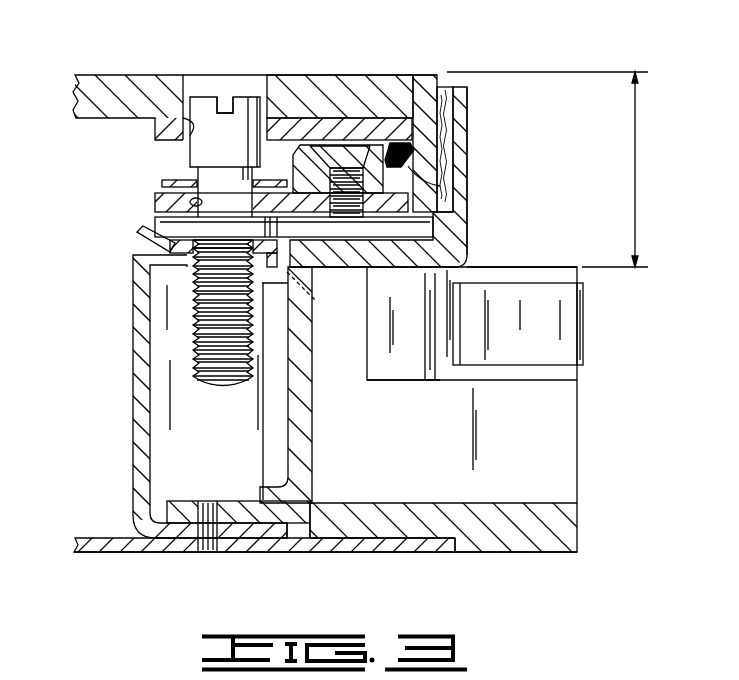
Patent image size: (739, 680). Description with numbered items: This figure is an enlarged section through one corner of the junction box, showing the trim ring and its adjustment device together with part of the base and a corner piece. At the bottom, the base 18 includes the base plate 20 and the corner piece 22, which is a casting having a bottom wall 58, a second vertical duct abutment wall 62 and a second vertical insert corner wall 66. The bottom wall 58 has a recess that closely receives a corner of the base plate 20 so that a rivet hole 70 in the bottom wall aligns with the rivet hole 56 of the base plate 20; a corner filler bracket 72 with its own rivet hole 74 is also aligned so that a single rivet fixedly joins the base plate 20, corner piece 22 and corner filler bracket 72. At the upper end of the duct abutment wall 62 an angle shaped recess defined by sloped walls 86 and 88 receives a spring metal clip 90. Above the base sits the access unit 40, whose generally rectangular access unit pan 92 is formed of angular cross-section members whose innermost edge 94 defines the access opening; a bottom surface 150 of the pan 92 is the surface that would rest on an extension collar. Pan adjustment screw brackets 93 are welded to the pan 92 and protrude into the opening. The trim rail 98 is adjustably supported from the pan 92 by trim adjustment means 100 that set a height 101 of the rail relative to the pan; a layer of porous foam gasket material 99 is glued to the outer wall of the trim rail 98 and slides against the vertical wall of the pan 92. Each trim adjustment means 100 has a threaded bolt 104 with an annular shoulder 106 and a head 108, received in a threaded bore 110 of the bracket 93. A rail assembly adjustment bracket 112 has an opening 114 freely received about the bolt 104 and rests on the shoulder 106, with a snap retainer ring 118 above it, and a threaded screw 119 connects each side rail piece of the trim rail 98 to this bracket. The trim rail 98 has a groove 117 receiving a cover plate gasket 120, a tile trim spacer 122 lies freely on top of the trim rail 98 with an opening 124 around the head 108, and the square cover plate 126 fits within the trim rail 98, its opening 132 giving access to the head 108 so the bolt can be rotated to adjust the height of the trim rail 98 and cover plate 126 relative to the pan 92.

The base 18 is at (376, 558).
The base plate 20 is at (97, 545).
The corner piece 22 is at (538, 552).
The access unit 40 is at (472, 140).
The rivet hole 56 is at (497, 267).
The bottom wall 58 is at (483, 525).
The second vertical duct abutment wall 62 is at (563, 397).
The second vertical insert corner wall 66 is at (303, 453).
The rivet hole 70 is at (233, 517).
The corner filler bracket 72 is at (140, 407).
The rivet hole 74 is at (230, 530).
The sloped wall 86 is at (530, 270).
The sloped wall 88 is at (407, 367).
The spring metal clip 90 is at (563, 302).
The access unit pan 92 is at (462, 168).
The pan adjustment screw bracket 93 is at (142, 240).
The innermost edge 94 is at (313, 306).
The trim rail 98 is at (423, 93).
The porous foam gasket material 99 is at (440, 112).
The trim adjustment means 100 is at (252, 94).
The height 101 is at (634, 147).
The threaded bolt 104 is at (186, 311).
The annular shoulder 106 is at (180, 223).
The head 108 is at (240, 103).
The threaded bore 110 is at (196, 272).
The rail assembly adjustment bracket 112 is at (187, 200).
The opening 114 is at (190, 191).
The groove 117 is at (440, 186).
The snap retainer ring 118 is at (175, 178).
The threaded screw 119 is at (340, 157).
The cover plate gasket 120 is at (415, 147).
The tile trim spacer 122 is at (380, 127).
The opening 124 is at (182, 75).
The cover plate 126 is at (330, 82).
The opening 132 is at (196, 72).
The bottom surface 150 is at (393, 270).